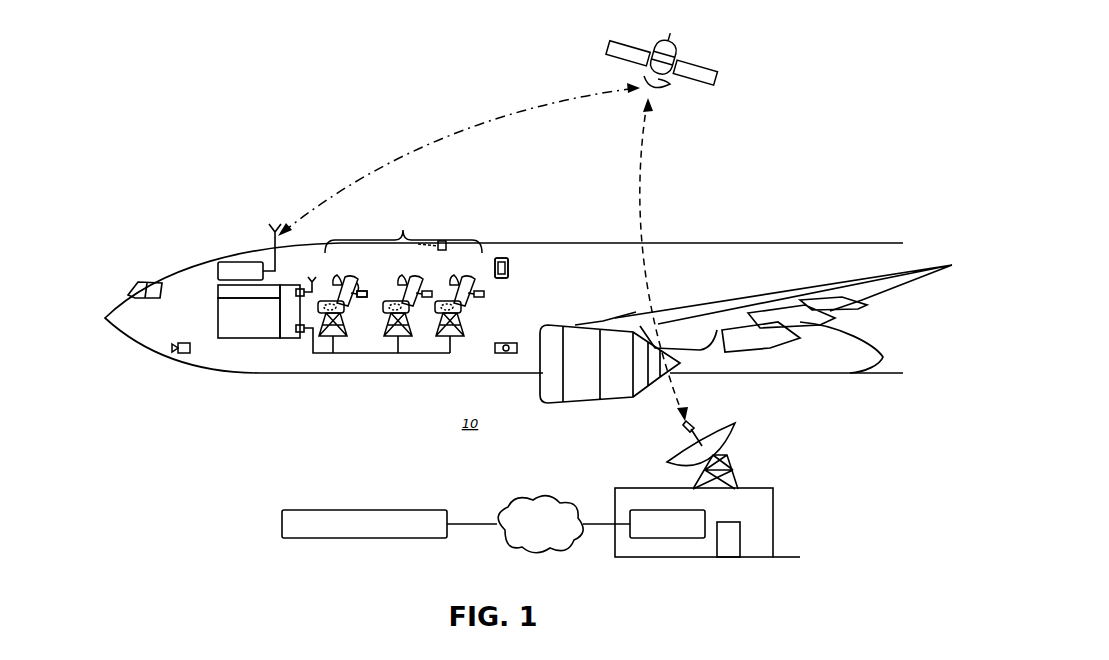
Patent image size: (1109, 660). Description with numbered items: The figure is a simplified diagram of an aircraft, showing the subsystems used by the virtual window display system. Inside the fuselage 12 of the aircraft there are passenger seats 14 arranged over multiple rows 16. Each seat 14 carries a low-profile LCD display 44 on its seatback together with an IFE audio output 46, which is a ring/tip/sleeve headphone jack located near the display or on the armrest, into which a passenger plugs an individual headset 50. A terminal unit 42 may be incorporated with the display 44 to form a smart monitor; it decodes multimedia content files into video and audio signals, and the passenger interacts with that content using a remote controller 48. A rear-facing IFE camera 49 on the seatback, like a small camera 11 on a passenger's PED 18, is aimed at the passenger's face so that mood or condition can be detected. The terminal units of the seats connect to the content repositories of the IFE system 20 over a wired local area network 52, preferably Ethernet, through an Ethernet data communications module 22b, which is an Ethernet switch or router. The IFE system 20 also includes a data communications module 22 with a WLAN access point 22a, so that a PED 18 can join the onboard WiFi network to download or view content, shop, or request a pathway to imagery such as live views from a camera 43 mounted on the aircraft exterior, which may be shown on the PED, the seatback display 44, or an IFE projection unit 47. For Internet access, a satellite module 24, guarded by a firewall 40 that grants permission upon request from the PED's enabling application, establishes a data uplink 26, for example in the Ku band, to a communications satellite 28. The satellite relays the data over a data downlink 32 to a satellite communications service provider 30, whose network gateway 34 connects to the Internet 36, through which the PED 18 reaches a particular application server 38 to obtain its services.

The small camera 11 is at (500, 258).
The fuselage 12 is at (708, 243).
The seat 14 is at (408, 310).
The rows 16 is at (403, 233).
The PED 18 is at (510, 266).
The IFE system 20 is at (241, 339).
The data communications module 22 is at (288, 284).
The WLAN access point 22a is at (303, 289).
The Ethernet data communications module 22b is at (298, 334).
The satellite module 24 is at (235, 262).
The data uplink 26 is at (436, 140).
The communications satellite 28 is at (668, 80).
The satellite communications service provider 30 is at (629, 488).
The data downlink 32 is at (637, 172).
The network gateway 34 is at (658, 539).
The Internet 36 is at (534, 497).
The application server 38 is at (357, 510).
The firewall 40 is at (218, 293).
The terminal unit 42 is at (420, 312).
The camera 43 is at (181, 354).
The display 44 is at (356, 280).
The IFE audio output 46 is at (388, 302).
The IFE projection unit 47 is at (446, 249).
The remote controller 48 is at (362, 298).
The IFE camera 49 is at (357, 283).
The headset 50 is at (405, 283).
The wired local area network 52 is at (352, 354).